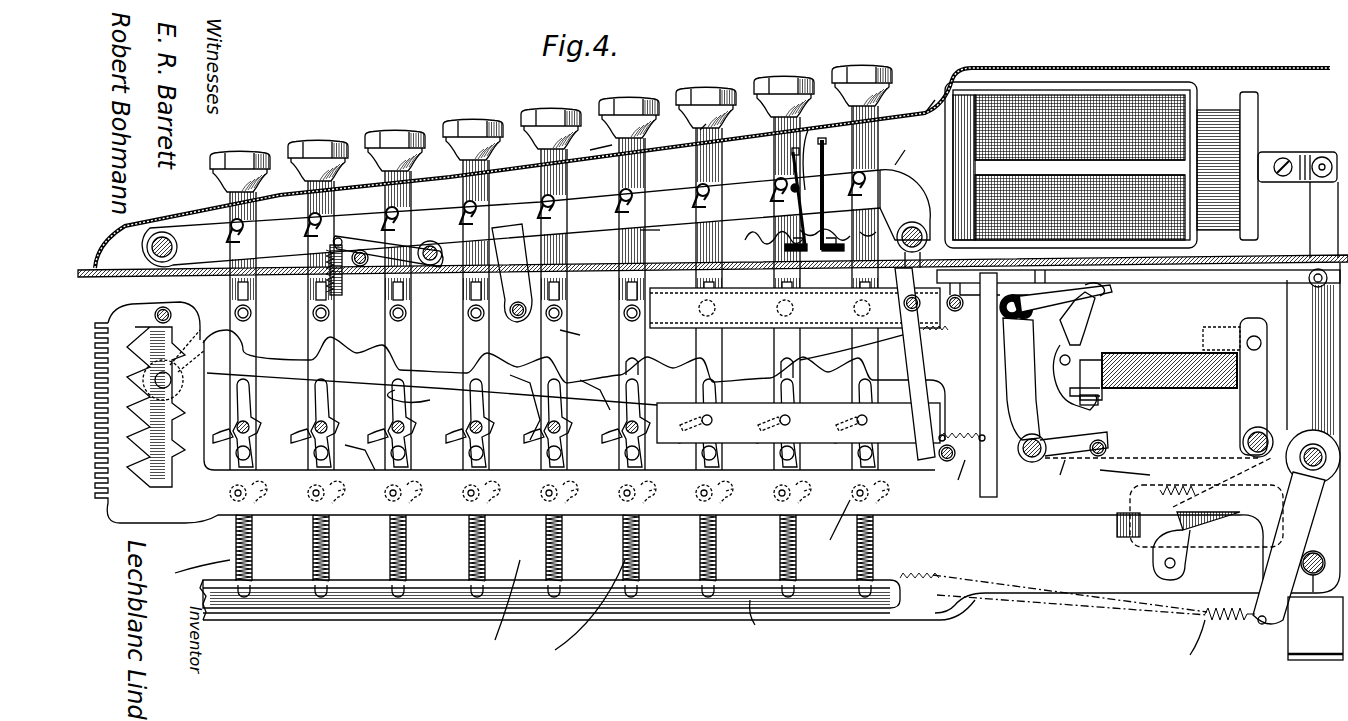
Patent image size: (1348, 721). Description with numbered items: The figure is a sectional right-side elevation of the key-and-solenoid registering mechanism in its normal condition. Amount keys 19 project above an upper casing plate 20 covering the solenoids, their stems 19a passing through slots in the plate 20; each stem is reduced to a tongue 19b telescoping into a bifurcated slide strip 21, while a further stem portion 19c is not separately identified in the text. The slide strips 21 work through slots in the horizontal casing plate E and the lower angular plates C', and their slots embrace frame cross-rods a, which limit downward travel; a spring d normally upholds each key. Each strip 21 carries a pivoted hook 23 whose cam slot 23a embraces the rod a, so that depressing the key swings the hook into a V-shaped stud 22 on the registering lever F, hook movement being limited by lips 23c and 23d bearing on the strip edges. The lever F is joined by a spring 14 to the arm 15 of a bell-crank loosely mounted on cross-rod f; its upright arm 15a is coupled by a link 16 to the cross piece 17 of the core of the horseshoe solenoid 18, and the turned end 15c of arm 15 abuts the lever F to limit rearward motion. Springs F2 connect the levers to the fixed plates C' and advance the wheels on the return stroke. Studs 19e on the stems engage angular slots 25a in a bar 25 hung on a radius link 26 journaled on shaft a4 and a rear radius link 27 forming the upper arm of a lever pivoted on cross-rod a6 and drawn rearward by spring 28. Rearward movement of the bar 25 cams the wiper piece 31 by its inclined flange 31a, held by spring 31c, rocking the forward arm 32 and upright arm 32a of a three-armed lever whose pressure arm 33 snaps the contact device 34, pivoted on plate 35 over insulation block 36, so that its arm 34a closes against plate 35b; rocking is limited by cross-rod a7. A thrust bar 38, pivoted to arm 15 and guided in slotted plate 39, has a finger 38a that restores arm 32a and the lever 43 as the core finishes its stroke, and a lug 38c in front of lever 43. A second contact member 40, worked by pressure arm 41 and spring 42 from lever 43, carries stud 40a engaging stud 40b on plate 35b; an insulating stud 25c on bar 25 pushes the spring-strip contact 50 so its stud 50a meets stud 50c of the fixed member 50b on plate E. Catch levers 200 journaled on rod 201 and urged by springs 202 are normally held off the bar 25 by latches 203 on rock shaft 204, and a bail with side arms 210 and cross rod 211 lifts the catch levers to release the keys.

The spring 14 is at (1120, 580).
The bell-crank arm 15 is at (1200, 530).
The upwardly extending arm 15a is at (1313, 333).
The laterally turned end portion 15c is at (1117, 525).
The link 16 is at (1305, 155).
The cross piece 17 is at (1258, 112).
The horseshoe solenoid 18 is at (1090, 100).
The amount keys 19 is at (862, 70).
The key stems 19a is at (700, 128).
The tongue 19b is at (664, 239).
The key shoulder 19c is at (594, 139).
The studs 19e is at (790, 170).
The upper casing plate 20 is at (962, 68).
The slide strips 21 is at (585, 325).
The V-shaped studs 22 is at (765, 510).
The hook 23 is at (460, 470).
The cam slot 23a is at (594, 393).
The bent-over lip 23c is at (296, 455).
The bent-over lip 23d is at (690, 470).
The bar 25 is at (545, 208).
The angular slots 25a is at (775, 192).
The insulating stud 25c is at (770, 75).
The radius link 26 is at (112, 250).
The radius link 27 is at (950, 520).
The spring 28 is at (929, 364).
The wiper piece 31 is at (900, 515).
The inclined flange 31a is at (829, 529).
The spring 31c is at (962, 421).
The forwardly projecting arm 32 is at (1002, 393).
The upwardly extending arm 32a is at (963, 483).
The pressure arm 33 is at (1104, 289).
The contact device 34 is at (1096, 305).
The arm 34a is at (1068, 481).
The plate 35 is at (1130, 355).
The plate 35b is at (1110, 400).
The insulation block 36 is at (1195, 335).
The thrust bar 38 is at (1270, 270).
The finger 38a is at (1040, 270).
The short finger 38c is at (952, 268).
The slotted guide plate 39 is at (860, 346).
The second contact member 40 is at (1085, 345).
The contact stud 40a is at (1159, 482).
The contact stud 40b is at (1245, 432).
The pressure arm 41 is at (1120, 292).
The spring 42 is at (1040, 360).
The lever 43 is at (1030, 612).
The movable contact member 50 is at (790, 80).
The contact stud 50a is at (823, 145).
The fixed contact member 50b is at (914, 145).
The contact stud 50c is at (916, 93).
The catch levers 200 is at (465, 160).
The frame cross rod 201 is at (425, 130).
The springs 202 is at (280, 190).
The latches 203 is at (535, 240).
The rock shaft 204 is at (518, 320).
The side arms 210 is at (405, 380).
The cross rod 211 is at (345, 300).
The frame cross-rods a is at (717, 441).
The shaft a4 is at (130, 308).
The frame cross-rod a6 is at (795, 308).
The frame cross-rod a7 is at (1145, 491).
The spring d is at (390, 618).
The frame cross-rod f is at (1313, 475).
The upper casing plate E is at (755, 238).
The registering lever F is at (499, 614).
The springs F2 is at (1192, 651).
The lower angular plates C' is at (752, 626).